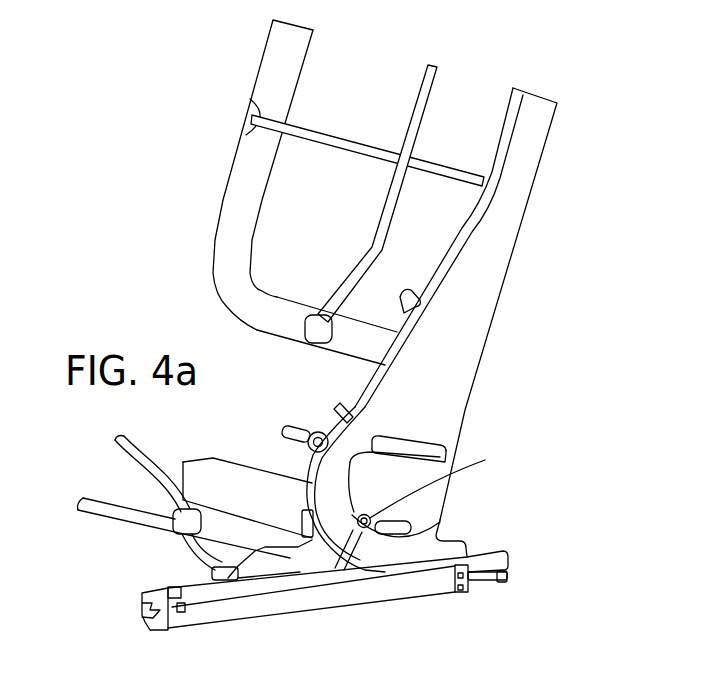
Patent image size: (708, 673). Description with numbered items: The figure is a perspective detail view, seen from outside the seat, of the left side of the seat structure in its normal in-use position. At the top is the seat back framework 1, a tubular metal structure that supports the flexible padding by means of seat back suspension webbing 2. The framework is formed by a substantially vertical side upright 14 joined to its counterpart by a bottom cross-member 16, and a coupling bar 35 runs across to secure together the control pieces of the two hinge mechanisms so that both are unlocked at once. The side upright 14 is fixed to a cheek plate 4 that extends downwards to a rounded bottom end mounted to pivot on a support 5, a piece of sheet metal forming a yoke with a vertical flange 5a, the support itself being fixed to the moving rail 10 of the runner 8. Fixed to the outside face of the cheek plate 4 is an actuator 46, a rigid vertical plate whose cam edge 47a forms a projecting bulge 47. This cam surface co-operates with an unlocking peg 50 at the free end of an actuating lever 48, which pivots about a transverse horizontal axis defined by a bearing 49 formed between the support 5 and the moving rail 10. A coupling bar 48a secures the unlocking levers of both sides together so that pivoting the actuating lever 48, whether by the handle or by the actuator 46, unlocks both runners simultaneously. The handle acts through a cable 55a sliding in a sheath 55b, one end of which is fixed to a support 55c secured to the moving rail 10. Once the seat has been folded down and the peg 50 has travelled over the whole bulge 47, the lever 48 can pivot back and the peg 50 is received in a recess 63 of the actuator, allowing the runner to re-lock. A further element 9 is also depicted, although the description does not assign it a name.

The seat back framework 1 is at (578, 110).
The seat back suspension webbing 2 is at (318, 133).
The cheek plate 4 is at (477, 322).
The support 5 is at (448, 530).
The vertical flange 5a is at (407, 555).
The runner 8 is at (462, 610).
The end fitting 9 is at (150, 627).
The moving rail 10 is at (497, 554).
The side upright 14 is at (272, 58).
The bottom cross-member 16 is at (278, 313).
The coupling bar 35 is at (298, 427).
The actuator 46 is at (428, 502).
The projecting bulge 47 is at (305, 462).
The cam edge 47a is at (451, 482).
The actuating lever 48 is at (343, 575).
The coupling bar 48a is at (102, 510).
The bearing 49 is at (303, 580).
The unlocking peg 50 is at (366, 529).
The cable 55a is at (197, 555).
The sheath 55b is at (140, 460).
The support 55c is at (240, 580).
The recess 63 is at (425, 455).